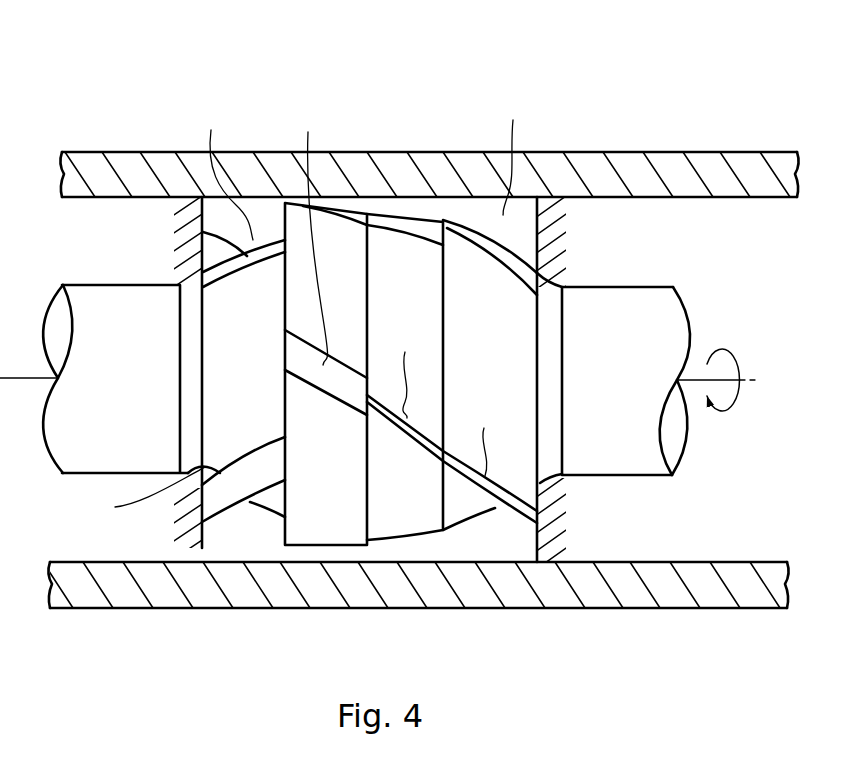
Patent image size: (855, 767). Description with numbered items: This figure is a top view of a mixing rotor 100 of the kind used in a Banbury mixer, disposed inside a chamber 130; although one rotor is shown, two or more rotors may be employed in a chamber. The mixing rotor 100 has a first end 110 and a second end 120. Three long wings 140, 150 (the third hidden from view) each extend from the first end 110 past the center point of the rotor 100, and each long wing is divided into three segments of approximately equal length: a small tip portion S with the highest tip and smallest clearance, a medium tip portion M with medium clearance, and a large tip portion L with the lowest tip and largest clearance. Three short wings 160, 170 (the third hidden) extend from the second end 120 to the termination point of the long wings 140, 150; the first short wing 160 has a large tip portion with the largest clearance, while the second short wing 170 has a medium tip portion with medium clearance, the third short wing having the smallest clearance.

The mixing rotor 100 is at (413, 362).
The first end 110 is at (555, 562).
The second end 120 is at (197, 205).
The chamber 130 is at (425, 160).
The long wing 140 is at (388, 444).
The long wing 150 is at (437, 213).
The first short wing 160 is at (233, 522).
The second short wing 170 is at (253, 213).